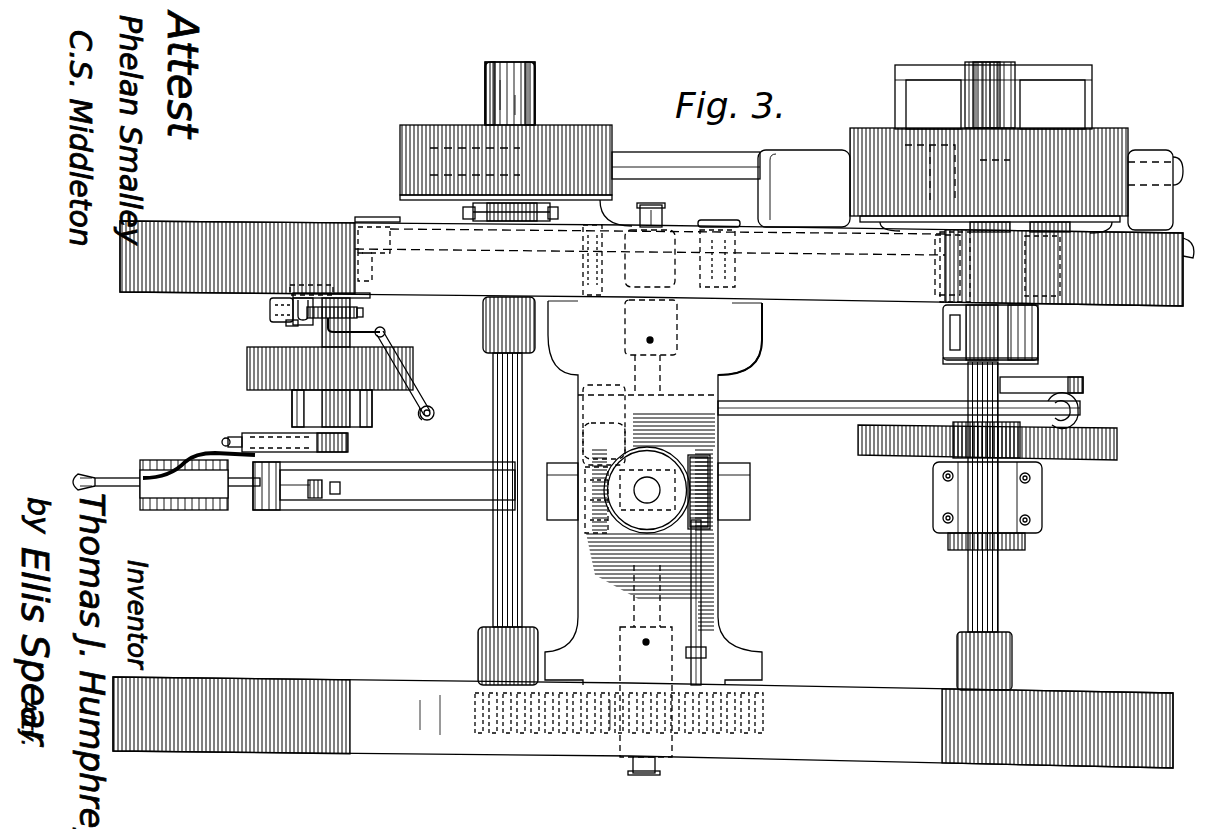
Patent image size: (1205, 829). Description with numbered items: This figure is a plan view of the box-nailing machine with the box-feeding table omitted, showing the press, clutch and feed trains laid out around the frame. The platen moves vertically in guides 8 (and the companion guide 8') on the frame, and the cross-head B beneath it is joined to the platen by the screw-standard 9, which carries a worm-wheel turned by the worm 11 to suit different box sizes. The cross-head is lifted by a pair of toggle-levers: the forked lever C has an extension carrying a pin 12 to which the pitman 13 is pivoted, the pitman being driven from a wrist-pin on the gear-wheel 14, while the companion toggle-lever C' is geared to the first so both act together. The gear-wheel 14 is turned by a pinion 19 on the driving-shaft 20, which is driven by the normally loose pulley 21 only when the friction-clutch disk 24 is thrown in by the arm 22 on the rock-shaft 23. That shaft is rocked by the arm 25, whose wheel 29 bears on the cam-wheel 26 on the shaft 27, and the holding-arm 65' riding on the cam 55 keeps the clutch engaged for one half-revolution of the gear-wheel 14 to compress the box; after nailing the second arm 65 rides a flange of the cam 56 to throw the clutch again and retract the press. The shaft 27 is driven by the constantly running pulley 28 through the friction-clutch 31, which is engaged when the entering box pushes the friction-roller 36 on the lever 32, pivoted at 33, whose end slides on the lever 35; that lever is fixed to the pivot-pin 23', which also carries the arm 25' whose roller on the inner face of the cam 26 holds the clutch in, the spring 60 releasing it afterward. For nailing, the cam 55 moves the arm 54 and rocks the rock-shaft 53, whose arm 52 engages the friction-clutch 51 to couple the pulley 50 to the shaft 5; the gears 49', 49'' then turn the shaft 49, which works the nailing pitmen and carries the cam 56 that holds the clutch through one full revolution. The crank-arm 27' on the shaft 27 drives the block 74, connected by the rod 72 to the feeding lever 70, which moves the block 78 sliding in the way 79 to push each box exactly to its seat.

The shaft 5 is at (493, 560).
The guides 8 is at (656, 493).
The frame standard shoulder 8' is at (740, 339).
The screw-standard 9 is at (650, 492).
The worm 11 is at (712, 492).
The pin 12 is at (583, 405).
The pitman 13 is at (832, 410).
The gear-wheel 14 is at (1138, 424).
The pinion 19 is at (960, 432).
The driving-shaft 20 is at (985, 385).
The pulley 21 is at (1105, 150).
The arm 22 is at (590, 244).
The rock-shaft 23 is at (657, 263).
The pivot-pin 23' is at (224, 313).
The friction-clutch disk 24 is at (935, 235).
The arm 25 is at (353, 261).
The arm 25' is at (286, 335).
The cam-wheel 26 is at (365, 300).
The shaft 27 is at (332, 359).
The crank-arm 27' is at (384, 486).
The pulley 28 is at (247, 368).
The wheel 29 is at (372, 296).
The friction-clutch 31 is at (265, 348).
The lever 32 is at (420, 395).
The pivot 33 is at (345, 395).
The lever 35 is at (360, 315).
The friction-roller 36 is at (445, 414).
The shaft 49 is at (648, 347).
The gear 49' is at (542, 744).
The gear 49'' is at (661, 714).
The pulley 50 is at (565, 128).
The friction-clutch 51 is at (400, 210).
The arm 52 is at (510, 152).
The rock-shaft 53 is at (690, 158).
The arm 54 is at (975, 262).
The cam 55 is at (940, 310).
The cam 56 is at (665, 300).
The spring 60 is at (308, 298).
The second arm 65 is at (735, 254).
The holding-arm 65' is at (1065, 285).
The lever 70 is at (166, 472).
The rod 72 is at (200, 456).
The block 74 is at (258, 435).
The block 78 is at (328, 500).
The way 79 is at (405, 508).
The cross-head B is at (722, 440).
The forked lever C is at (582, 441).
The companion toggle-lever C' is at (571, 516).